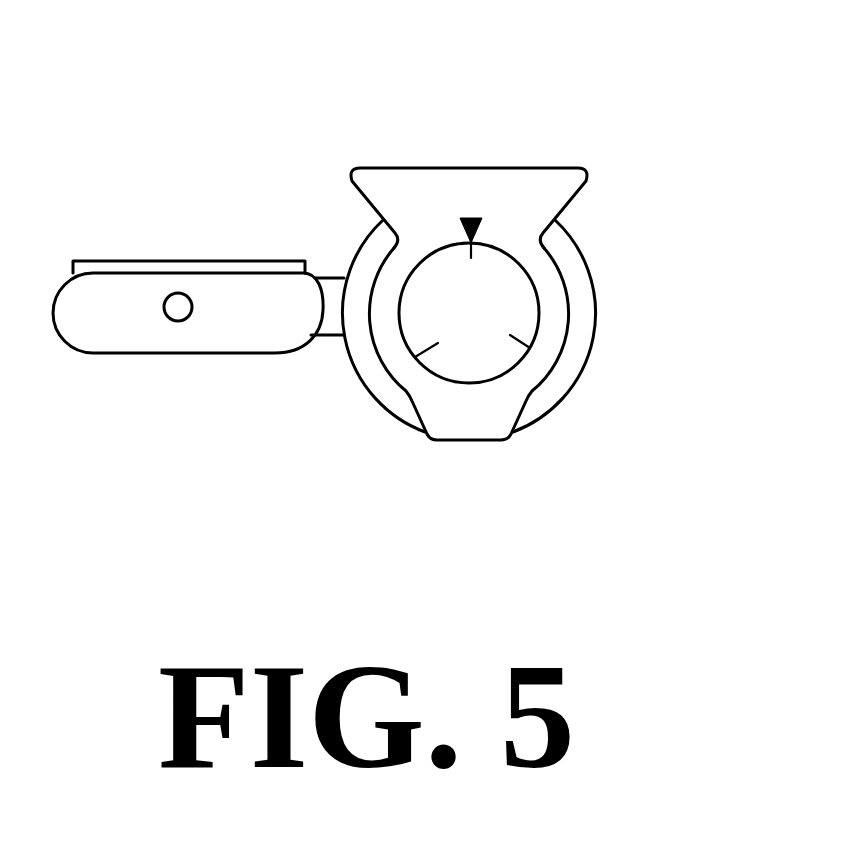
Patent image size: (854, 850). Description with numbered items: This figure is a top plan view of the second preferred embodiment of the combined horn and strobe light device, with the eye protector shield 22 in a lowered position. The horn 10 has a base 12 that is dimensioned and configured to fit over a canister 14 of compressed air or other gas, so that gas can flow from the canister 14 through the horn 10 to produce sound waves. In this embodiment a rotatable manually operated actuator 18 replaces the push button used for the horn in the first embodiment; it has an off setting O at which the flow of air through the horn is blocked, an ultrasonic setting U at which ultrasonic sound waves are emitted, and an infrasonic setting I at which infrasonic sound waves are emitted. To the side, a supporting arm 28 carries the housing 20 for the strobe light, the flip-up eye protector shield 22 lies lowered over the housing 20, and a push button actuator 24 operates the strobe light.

The horn 10 is at (470, 167).
The base 12 is at (467, 441).
The canister 14 is at (597, 308).
The rotatable manually operated actuator 18 is at (440, 247).
The housing 20 is at (145, 354).
The flip-up eye protector shield 22 is at (168, 262).
The push button actuator 24 is at (164, 311).
The supporting arm 28 is at (328, 336).